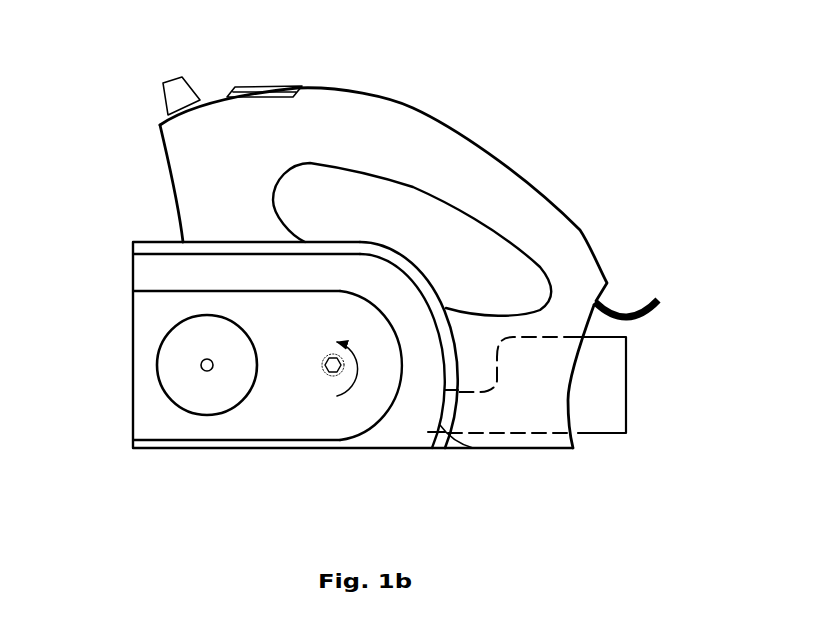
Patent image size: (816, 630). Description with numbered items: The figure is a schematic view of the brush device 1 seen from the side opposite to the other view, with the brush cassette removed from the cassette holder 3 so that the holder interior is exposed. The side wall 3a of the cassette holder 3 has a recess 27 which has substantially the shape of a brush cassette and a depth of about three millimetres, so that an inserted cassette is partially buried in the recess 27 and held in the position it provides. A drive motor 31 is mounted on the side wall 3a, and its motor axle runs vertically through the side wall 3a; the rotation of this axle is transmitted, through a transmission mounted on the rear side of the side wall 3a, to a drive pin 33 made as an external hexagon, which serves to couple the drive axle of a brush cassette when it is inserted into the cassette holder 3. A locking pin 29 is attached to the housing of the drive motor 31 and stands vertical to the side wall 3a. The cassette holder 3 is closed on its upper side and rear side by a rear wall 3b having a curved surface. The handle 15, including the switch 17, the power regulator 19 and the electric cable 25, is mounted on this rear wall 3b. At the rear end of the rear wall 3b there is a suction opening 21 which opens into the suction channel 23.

The brush device 1 is at (383, 244).
The cassette holder 3 is at (312, 288).
The side wall 3a is at (147, 274).
The rear wall 3b is at (426, 282).
The handle 15 is at (374, 109).
The switch 17 is at (272, 79).
The power regulator 19 is at (170, 74).
The suction opening 21 is at (439, 424).
The suction channel 23 is at (611, 398).
The electric cable 25 is at (620, 304).
The recess 27 is at (323, 298).
The locking pin 29 is at (204, 380).
The drive motor 31 is at (152, 363).
The drive pin 33 is at (327, 383).